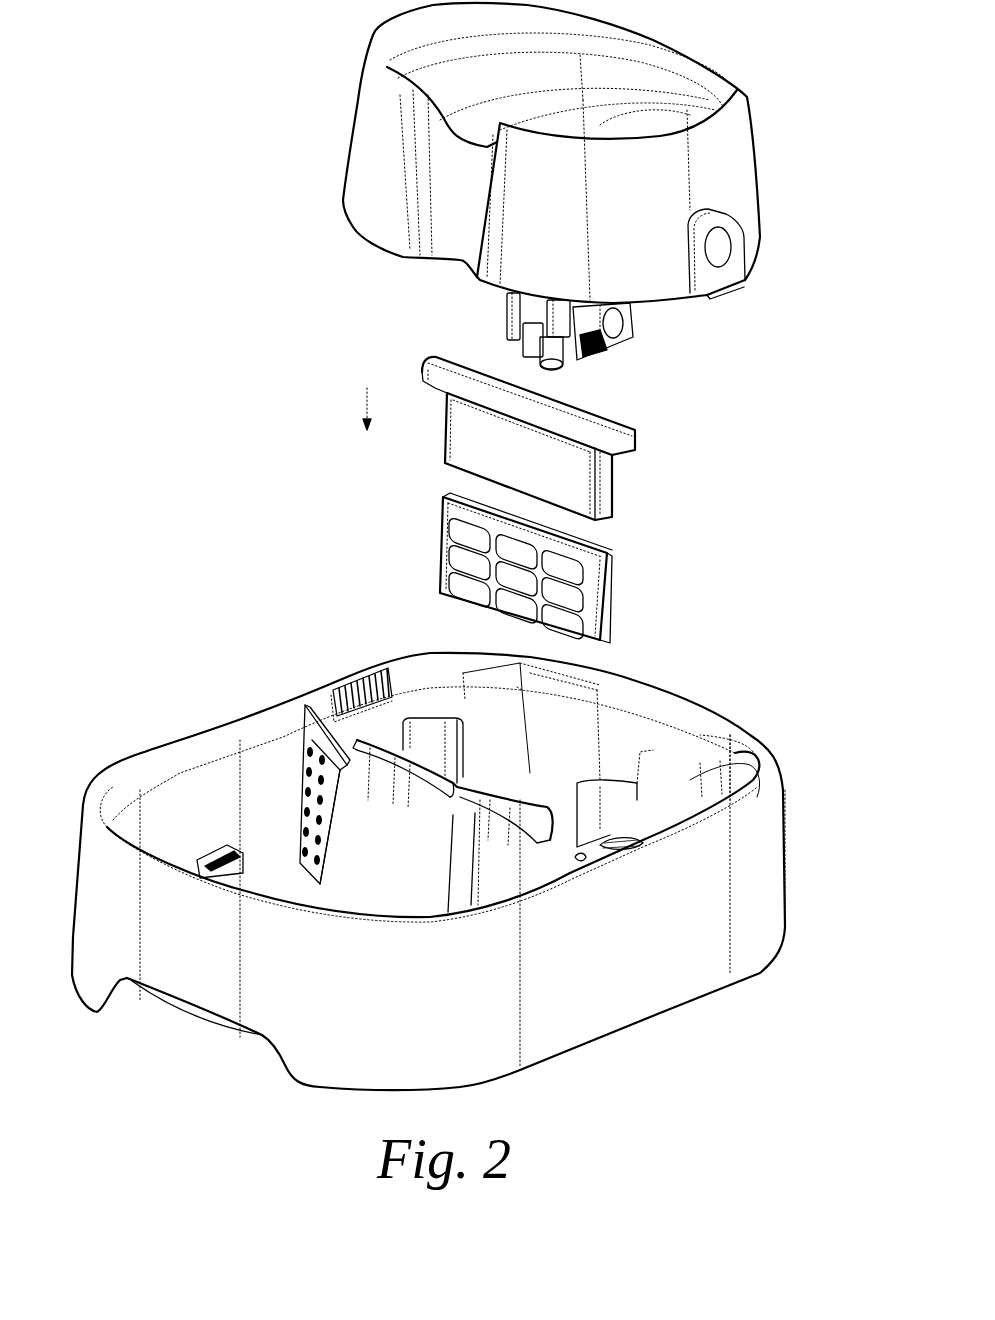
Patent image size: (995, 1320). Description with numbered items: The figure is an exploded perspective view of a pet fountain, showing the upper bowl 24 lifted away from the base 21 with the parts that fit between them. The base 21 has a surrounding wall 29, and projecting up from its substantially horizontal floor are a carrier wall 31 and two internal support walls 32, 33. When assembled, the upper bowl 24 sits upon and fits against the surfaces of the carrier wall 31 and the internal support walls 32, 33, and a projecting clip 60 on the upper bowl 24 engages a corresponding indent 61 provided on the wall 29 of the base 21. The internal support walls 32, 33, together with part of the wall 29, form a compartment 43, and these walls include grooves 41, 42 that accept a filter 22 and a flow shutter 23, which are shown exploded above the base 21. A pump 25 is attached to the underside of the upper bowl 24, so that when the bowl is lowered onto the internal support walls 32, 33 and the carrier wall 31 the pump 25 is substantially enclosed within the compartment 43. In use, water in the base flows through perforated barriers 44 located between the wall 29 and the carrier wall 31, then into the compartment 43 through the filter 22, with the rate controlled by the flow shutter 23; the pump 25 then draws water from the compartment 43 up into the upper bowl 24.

The base 21 is at (643, 970).
The filter 22 is at (593, 595).
The flow shutter 23 is at (598, 482).
The upper bowl 24 is at (372, 153).
The pump 25 is at (607, 350).
The wall 29 is at (210, 787).
The carrier wall 31 is at (365, 827).
The internal support wall 32 is at (445, 730).
The internal support wall 33 is at (680, 790).
The groove 41 is at (472, 707).
The groove 42 is at (595, 783).
The compartment 43 is at (573, 743).
The perforated barrier 44 is at (290, 795).
The projecting clip 60 is at (725, 274).
The indent 61 is at (355, 700).